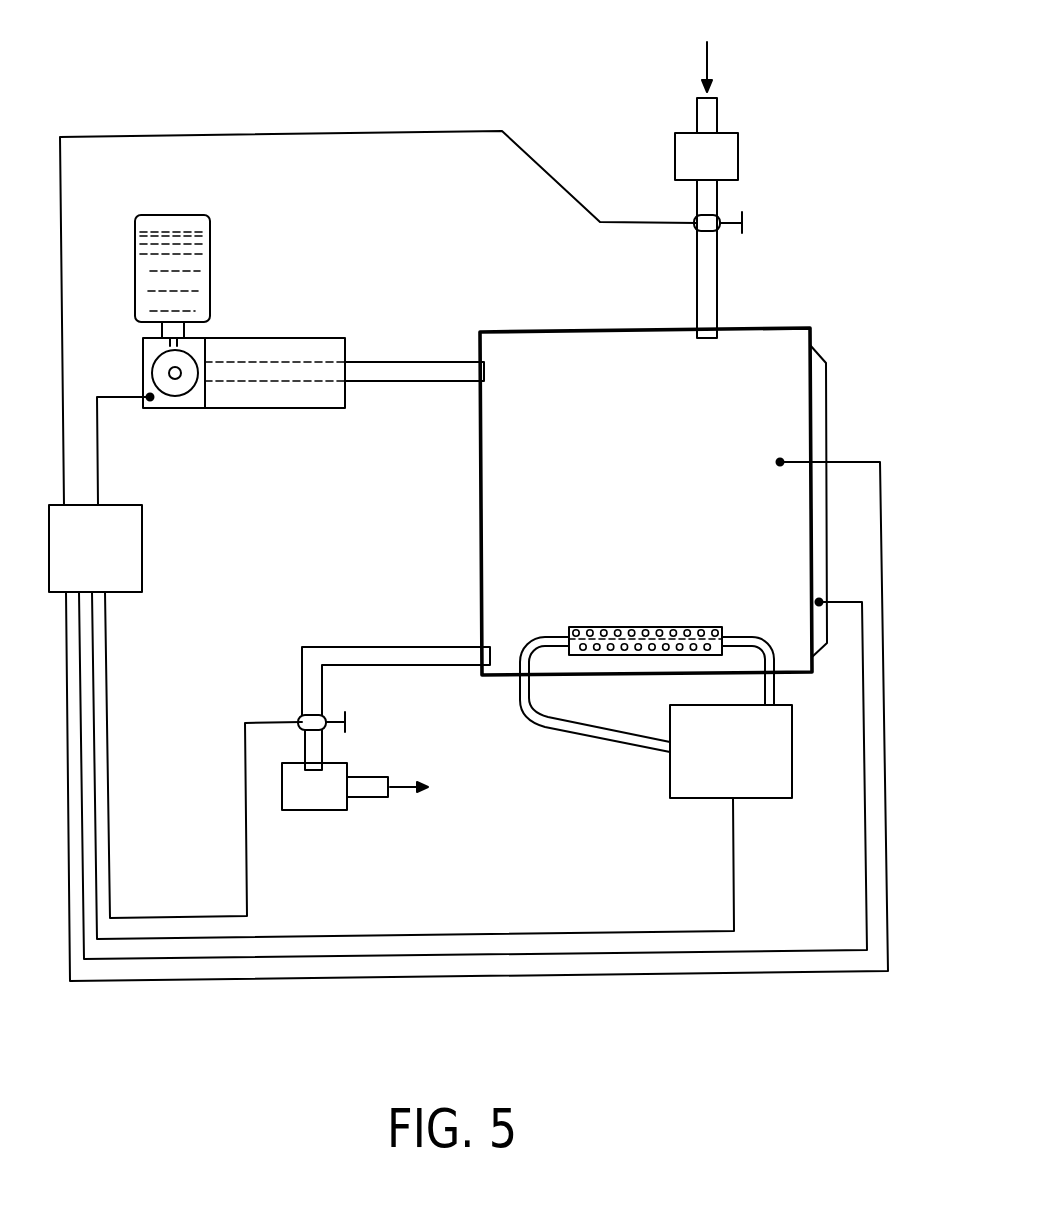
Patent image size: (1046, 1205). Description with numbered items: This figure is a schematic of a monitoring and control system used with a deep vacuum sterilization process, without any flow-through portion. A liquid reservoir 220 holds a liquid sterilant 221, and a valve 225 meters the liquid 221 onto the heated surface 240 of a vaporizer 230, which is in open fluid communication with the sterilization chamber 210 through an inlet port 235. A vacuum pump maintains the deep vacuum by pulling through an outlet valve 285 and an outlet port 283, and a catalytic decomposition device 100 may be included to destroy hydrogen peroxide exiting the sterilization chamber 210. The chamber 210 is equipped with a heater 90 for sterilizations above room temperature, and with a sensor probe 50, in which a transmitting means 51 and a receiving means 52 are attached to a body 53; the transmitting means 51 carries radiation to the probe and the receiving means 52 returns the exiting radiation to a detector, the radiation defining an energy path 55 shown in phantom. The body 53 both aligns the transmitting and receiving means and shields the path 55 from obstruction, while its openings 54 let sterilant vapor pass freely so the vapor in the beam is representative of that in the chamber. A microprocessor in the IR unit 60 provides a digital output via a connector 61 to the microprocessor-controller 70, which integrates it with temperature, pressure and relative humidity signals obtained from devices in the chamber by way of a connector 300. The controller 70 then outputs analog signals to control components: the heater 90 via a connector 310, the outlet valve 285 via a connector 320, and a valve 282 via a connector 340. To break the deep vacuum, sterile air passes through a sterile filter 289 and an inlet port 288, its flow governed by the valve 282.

The connector 340 is at (283, 132).
The liquid reservoir 220 is at (172, 215).
The liquid sterilant 221 is at (170, 243).
The valve 225 is at (157, 368).
The vaporizer 230 is at (275, 338).
The heated surface 240 is at (314, 360).
The inlet port 235 is at (410, 372).
The microprocessor-controller 70 is at (117, 505).
The outlet port 283 is at (472, 655).
The outlet valve 285 is at (317, 722).
The catalytic decomposition device 100 is at (314, 812).
The connector 320 is at (246, 870).
The sterile filter 289 is at (730, 134).
The inlet port 288 is at (710, 298).
The valve 282 is at (712, 225).
The sterilization chamber 210 is at (790, 328).
The heater 90 is at (823, 408).
The connector 300 is at (852, 460).
The connector 310 is at (867, 843).
The connector 61 is at (736, 854).
The IR unit 60 is at (706, 800).
The transmitting means 51 is at (778, 695).
The receiving means 52 is at (614, 748).
The sensor probe 50 is at (673, 582).
The body 53 is at (583, 626).
The openings 54 is at (676, 630).
The energy path 55 is at (627, 641).